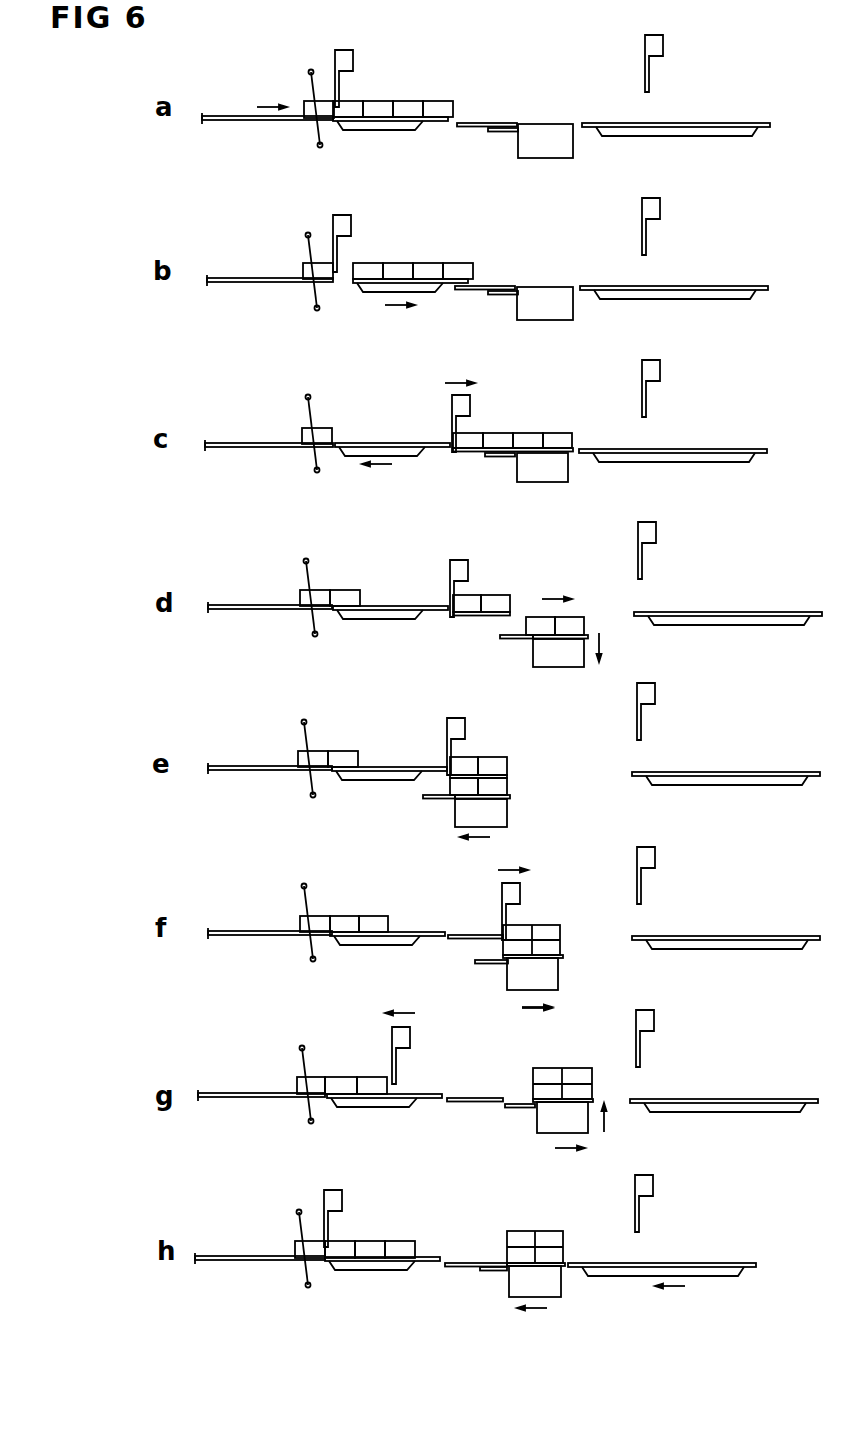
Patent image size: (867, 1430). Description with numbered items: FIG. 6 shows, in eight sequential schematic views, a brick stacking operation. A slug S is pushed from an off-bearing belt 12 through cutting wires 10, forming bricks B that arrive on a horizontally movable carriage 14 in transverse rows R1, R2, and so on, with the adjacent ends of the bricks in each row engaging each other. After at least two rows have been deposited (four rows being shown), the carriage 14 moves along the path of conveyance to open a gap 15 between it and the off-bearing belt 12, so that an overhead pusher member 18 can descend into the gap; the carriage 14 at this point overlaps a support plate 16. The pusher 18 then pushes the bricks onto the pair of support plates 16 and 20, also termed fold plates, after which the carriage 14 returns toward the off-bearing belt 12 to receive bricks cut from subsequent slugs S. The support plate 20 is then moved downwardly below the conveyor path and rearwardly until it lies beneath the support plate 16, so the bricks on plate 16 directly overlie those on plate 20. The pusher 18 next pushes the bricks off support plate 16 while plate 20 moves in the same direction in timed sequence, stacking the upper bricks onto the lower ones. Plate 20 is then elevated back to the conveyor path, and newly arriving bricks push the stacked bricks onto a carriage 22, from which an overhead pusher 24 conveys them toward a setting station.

The cutting wires 10 is at (309, 73).
The off-bearing belt 12 is at (226, 122).
The slug S is at (306, 120).
The bricks B is at (393, 109).
The row of bricks R1 is at (438, 131).
The row of bricks R2 is at (405, 116).
The carriage 14 is at (432, 293).
The gap 15 is at (341, 283).
The support plate 16 is at (490, 285).
The overhead pusher member 18 is at (338, 251).
The support plate 20 is at (545, 286).
The carriage 22 is at (730, 627).
The overhead pusher 24 is at (640, 1222).